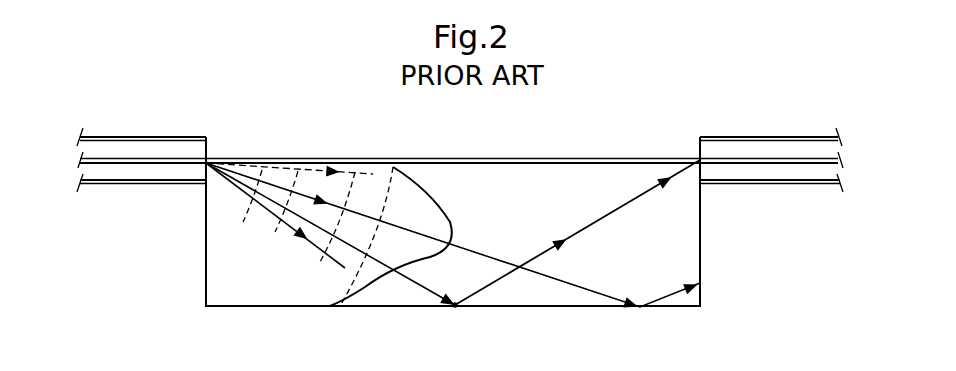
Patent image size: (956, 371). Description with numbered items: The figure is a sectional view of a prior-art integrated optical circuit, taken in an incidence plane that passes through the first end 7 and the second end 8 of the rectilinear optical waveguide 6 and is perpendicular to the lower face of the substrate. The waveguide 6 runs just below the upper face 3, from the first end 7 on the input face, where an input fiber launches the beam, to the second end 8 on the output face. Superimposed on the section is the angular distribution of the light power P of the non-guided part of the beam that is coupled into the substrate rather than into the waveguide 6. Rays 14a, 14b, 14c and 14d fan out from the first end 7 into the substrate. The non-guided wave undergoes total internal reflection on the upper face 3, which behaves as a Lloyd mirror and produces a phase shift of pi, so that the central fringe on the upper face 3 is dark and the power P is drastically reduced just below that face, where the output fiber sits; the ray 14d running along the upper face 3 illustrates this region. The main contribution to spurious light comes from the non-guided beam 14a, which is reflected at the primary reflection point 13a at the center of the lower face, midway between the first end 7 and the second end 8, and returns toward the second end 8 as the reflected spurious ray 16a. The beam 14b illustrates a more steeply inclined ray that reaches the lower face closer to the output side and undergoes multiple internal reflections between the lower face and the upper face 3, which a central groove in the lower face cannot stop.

The upper face 3 is at (518, 157).
The optical waveguide 6 is at (602, 157).
The first end 7 is at (208, 160).
The second end 8 is at (700, 158).
The primary reflection point 13a is at (455, 306).
The non-guided beam 14a is at (410, 283).
The non-guided optical beam 14b is at (608, 296).
The light ray at large angle 14c is at (338, 266).
The light ray along upper boundary 14d is at (373, 172).
The reflected light ray toward output waveguide 16a is at (657, 190).
The light power P is at (436, 196).